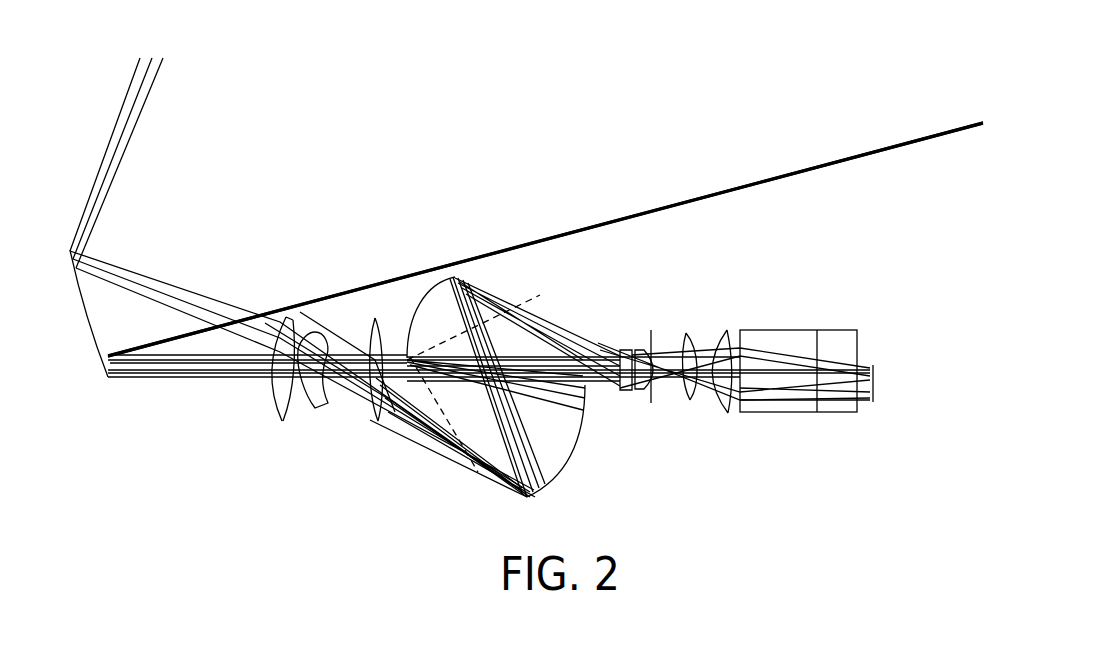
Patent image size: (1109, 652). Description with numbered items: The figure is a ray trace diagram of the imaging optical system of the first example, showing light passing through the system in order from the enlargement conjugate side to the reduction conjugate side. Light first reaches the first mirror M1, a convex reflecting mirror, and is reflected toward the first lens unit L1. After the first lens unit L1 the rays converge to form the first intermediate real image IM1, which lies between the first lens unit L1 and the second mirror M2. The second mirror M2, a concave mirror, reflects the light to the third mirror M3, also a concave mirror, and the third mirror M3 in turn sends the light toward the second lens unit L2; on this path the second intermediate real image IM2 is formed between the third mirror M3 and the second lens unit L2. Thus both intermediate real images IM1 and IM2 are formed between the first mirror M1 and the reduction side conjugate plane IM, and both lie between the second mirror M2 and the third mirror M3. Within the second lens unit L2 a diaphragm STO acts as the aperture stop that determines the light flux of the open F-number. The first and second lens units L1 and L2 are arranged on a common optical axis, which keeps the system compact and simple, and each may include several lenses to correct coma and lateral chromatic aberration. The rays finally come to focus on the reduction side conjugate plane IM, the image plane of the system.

The first mirror M1 is at (108, 378).
The first lens unit L1 is at (398, 427).
The first intermediate real image IM1 is at (468, 455).
The second mirror M2 is at (560, 463).
The third mirror M3 is at (462, 283).
The second intermediate real image IM2 is at (545, 306).
The diaphragm STO is at (651, 330).
The second lens unit L2 is at (616, 418).
The reduction side conjugate plane IM is at (873, 383).